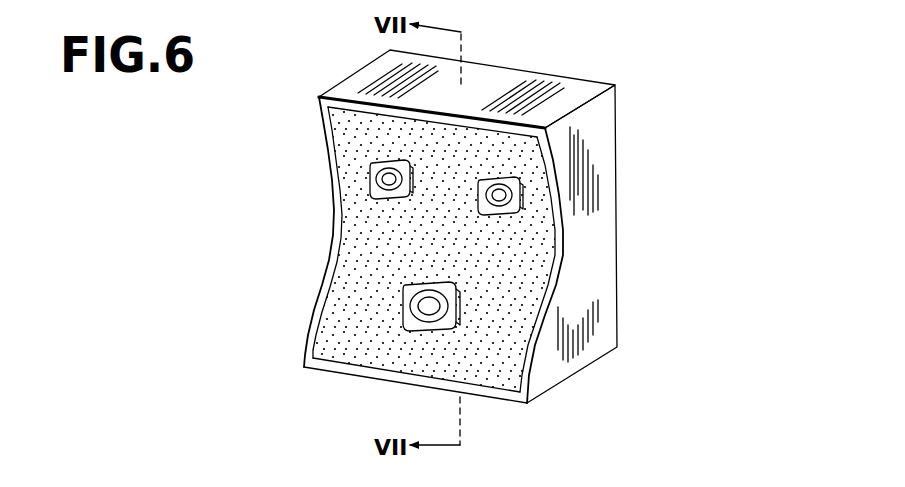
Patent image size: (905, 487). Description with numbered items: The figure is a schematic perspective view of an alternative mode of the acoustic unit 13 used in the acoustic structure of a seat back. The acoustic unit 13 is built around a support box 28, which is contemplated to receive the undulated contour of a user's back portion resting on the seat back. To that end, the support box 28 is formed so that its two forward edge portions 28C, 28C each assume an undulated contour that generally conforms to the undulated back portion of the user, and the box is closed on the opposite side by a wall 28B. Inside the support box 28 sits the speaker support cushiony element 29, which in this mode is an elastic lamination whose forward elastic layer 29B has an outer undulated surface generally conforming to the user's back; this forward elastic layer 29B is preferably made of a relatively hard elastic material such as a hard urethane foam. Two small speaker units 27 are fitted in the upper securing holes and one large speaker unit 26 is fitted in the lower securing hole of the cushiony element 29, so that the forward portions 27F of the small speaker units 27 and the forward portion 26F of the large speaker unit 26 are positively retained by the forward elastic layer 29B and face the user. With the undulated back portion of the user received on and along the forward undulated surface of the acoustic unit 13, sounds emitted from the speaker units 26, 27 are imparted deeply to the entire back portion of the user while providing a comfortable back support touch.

The acoustic unit 13 is at (645, 90).
The support box 28 is at (338, 80).
The bottom wall 28B is at (615, 339).
The forward edge portions 28C is at (337, 214).
The speaker support cushiony element 29 is at (358, 246).
The forward elastic layer 29B is at (333, 330).
The small speaker unit 27 is at (370, 178).
The forward portion of small speaker unit 27F is at (372, 165).
The large speaker unit 26 is at (403, 298).
The forward portion of large speaker unit 26F is at (413, 323).